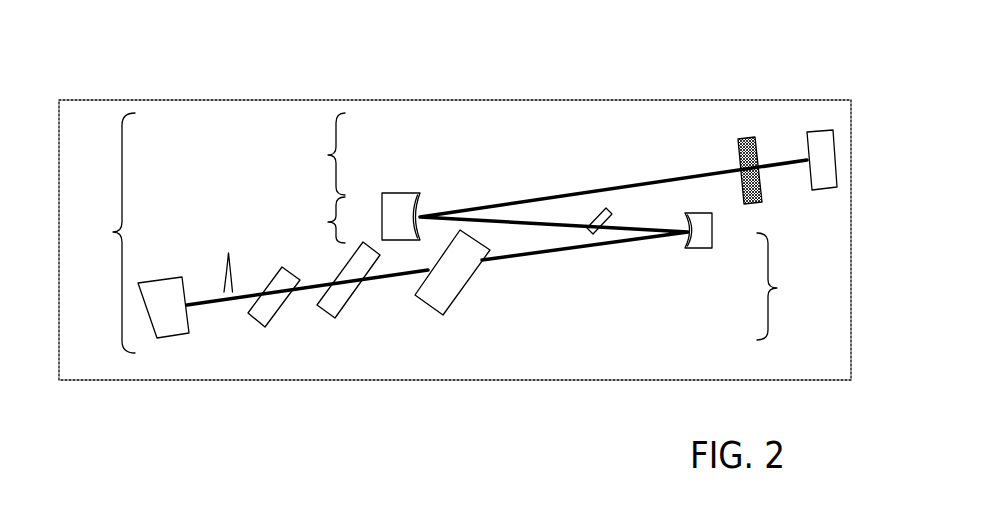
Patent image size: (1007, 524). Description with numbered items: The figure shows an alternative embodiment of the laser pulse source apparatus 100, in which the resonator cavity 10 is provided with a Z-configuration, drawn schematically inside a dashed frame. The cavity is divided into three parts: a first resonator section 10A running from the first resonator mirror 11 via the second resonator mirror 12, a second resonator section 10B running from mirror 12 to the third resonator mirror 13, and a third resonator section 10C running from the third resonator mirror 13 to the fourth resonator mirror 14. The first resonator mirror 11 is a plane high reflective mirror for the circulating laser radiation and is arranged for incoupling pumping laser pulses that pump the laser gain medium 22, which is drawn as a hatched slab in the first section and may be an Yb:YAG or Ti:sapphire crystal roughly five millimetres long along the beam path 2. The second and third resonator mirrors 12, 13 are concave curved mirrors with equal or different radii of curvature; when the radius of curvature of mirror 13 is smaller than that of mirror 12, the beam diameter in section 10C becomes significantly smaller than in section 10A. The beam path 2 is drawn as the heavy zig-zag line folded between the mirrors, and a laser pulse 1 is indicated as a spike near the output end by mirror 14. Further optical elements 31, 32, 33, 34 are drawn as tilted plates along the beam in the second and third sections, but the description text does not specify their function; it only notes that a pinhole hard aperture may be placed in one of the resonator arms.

The laser pulse source apparatus 100 is at (146, 78).
The resonator cavity 10 is at (100, 241).
The first resonator section 10A is at (318, 171).
The second resonator section 10B is at (315, 234).
The third resonator section 10C is at (827, 291).
The laser pulse 1 is at (233, 270).
The beam path 2 is at (490, 260).
The first resonator mirror 11 is at (817, 142).
The second resonator mirror 12 is at (403, 197).
The third resonator mirror 13 is at (693, 248).
The fourth resonator mirror 14 is at (165, 290).
The laser gain medium 22 is at (750, 172).
The optical element 31 is at (590, 235).
The optical element 32 is at (442, 290).
The optical element 33 is at (340, 293).
The optical element 34 is at (259, 308).